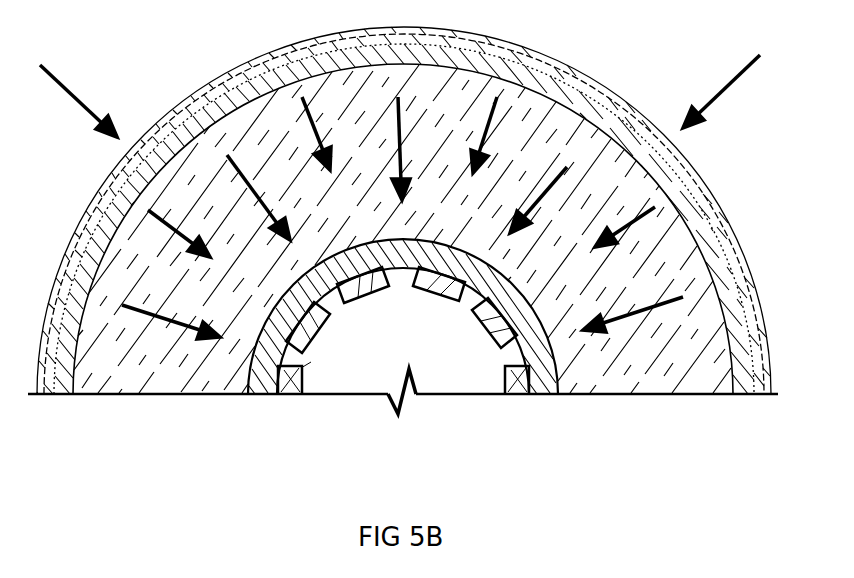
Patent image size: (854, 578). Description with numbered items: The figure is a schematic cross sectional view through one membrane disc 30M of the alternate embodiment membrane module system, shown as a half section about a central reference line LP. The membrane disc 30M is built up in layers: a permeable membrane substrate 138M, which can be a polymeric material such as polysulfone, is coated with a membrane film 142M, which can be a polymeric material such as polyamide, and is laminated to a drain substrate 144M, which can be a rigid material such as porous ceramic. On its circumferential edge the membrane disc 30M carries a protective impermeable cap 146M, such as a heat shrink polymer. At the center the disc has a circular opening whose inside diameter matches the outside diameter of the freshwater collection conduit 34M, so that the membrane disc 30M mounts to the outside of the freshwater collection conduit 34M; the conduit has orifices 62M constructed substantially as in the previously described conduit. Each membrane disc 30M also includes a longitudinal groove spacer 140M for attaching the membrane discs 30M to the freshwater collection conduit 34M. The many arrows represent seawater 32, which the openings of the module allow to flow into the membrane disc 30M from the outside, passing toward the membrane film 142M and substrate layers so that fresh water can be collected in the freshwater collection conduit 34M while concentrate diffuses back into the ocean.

The membrane disc 30M is at (415, 207).
The seawater 32 is at (60, 83).
The protective impermeable cap 146M is at (517, 45).
The membrane film 142M is at (596, 80).
The permeable membrane substrate 138M is at (707, 197).
The drain substrate 144M is at (707, 260).
The longitudinal groove spacer 140M is at (265, 380).
The orifices 62M is at (300, 362).
The freshwater collection conduit 34M is at (518, 372).
The longitudinal plane LP is at (402, 378).